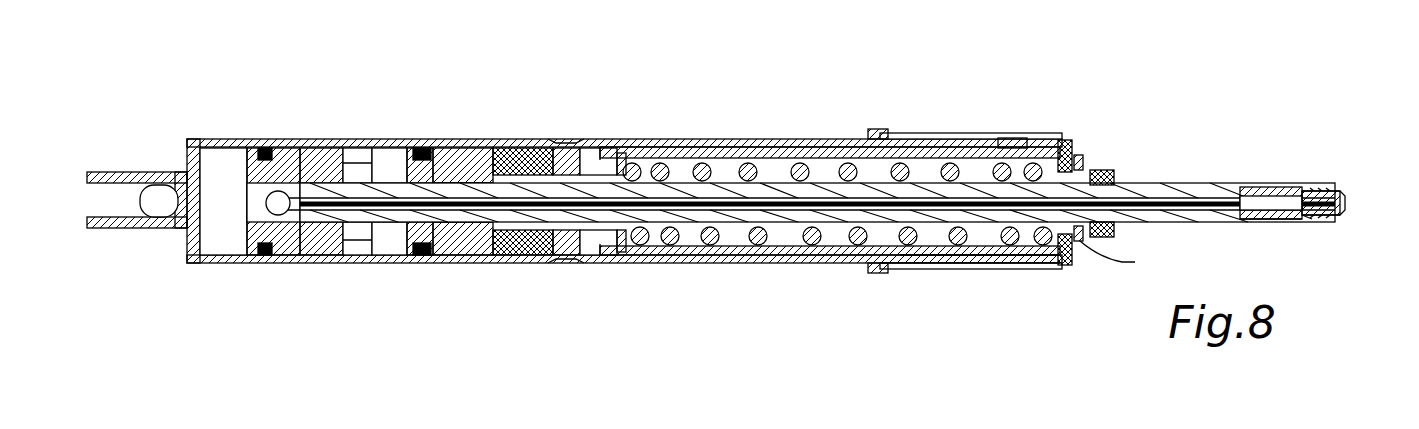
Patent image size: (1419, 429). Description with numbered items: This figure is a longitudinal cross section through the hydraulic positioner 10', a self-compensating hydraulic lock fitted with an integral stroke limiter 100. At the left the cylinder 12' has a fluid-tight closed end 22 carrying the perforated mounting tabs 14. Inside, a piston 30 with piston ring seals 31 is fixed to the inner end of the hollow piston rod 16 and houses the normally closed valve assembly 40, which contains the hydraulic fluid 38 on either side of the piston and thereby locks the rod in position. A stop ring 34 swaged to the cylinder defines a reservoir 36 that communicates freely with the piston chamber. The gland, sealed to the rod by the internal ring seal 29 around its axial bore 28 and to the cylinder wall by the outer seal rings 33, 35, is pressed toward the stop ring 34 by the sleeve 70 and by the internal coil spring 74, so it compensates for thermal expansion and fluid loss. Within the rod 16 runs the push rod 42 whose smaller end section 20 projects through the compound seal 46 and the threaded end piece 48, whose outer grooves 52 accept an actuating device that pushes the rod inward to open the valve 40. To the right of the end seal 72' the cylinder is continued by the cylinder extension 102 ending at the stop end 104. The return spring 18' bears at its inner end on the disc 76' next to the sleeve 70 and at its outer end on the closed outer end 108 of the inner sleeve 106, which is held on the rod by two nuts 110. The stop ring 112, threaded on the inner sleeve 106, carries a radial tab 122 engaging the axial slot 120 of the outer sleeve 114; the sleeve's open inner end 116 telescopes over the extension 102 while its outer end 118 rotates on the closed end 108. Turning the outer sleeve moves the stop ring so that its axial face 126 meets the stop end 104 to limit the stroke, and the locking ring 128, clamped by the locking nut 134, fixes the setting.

The hydraulic positioner 10' is at (422, 68).
The cylinder 12' is at (624, 153).
The mounting tabs 14 is at (158, 229).
The piston rod 16 is at (1153, 186).
The return spring 18' is at (837, 246).
The end section 20 is at (1342, 207).
The closed end 22 is at (186, 147).
The axial bore 28 is at (452, 265).
The internal ring seal 29 is at (475, 148).
The piston 30 is at (308, 148).
The piston ring seals 31 is at (267, 148).
The outer seal ring 33 is at (417, 265).
The stop ring 34 is at (353, 148).
The outer seal ring 35 is at (428, 265).
The reservoir 36 is at (382, 265).
The hydraulic fluid 38 is at (303, 265).
The valve assembly 40 is at (220, 150).
The push rod 42 is at (1213, 190).
The compound seal 46 is at (1268, 222).
The threaded end piece 48 is at (1307, 222).
The outer grooves 52 is at (1323, 190).
The sleeve 70 is at (588, 264).
The end seal 72' is at (622, 166).
The internal coil spring 74 is at (510, 265).
The disc 76' is at (618, 241).
The stroke limiter 100 is at (860, 128).
The cylinder extension 102 is at (717, 147).
The stop end 104 is at (893, 132).
The inner sleeve 106 is at (962, 272).
The closed outer end 108 is at (1095, 143).
The nuts 110 is at (1122, 265).
The stop ring 112 is at (1017, 272).
The outer sleeve 114 is at (920, 270).
The open inner end 116 is at (870, 272).
The outer end 118 is at (1063, 142).
The axial slot 120 is at (975, 134).
The radial tab 122 is at (1008, 138).
The axial face 126 is at (893, 272).
The locking ring 128 is at (1080, 143).
The locking nut 134 is at (1078, 263).